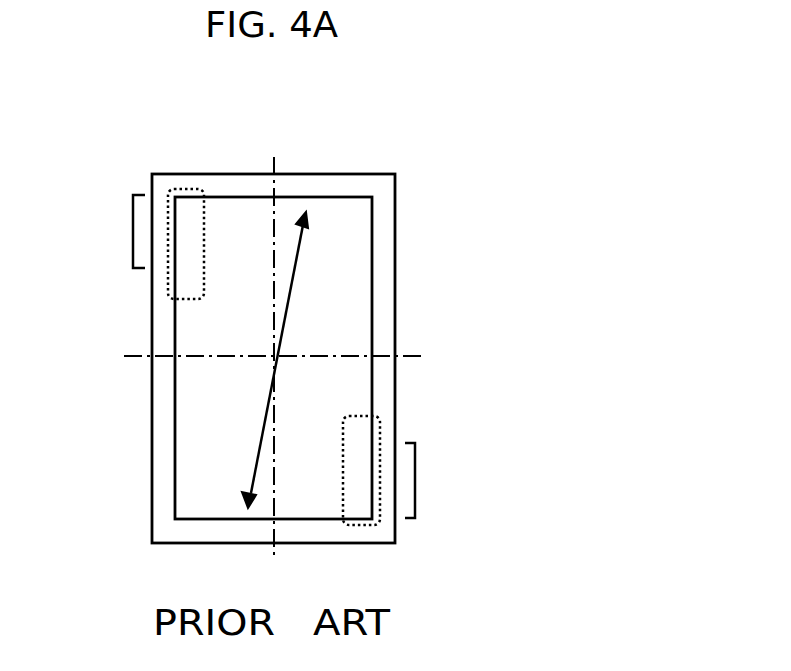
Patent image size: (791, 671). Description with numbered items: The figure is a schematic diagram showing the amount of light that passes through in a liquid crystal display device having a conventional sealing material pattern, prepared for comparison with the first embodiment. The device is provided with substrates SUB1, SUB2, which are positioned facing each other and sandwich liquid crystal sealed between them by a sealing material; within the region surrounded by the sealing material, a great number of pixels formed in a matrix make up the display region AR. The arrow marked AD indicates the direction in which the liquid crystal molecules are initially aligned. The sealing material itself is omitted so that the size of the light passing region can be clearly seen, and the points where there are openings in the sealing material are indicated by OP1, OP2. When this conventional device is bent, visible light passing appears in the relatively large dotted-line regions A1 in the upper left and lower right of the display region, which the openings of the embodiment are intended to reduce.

The substrate SUB1 is at (395, 338).
The substrate SUB2 is at (372, 186).
The display region AR is at (232, 228).
The initial alignment direction AD is at (307, 217).
The light passing region A1 is at (168, 290).
The opening OP1 is at (107, 231).
The opening OP2 is at (439, 480).